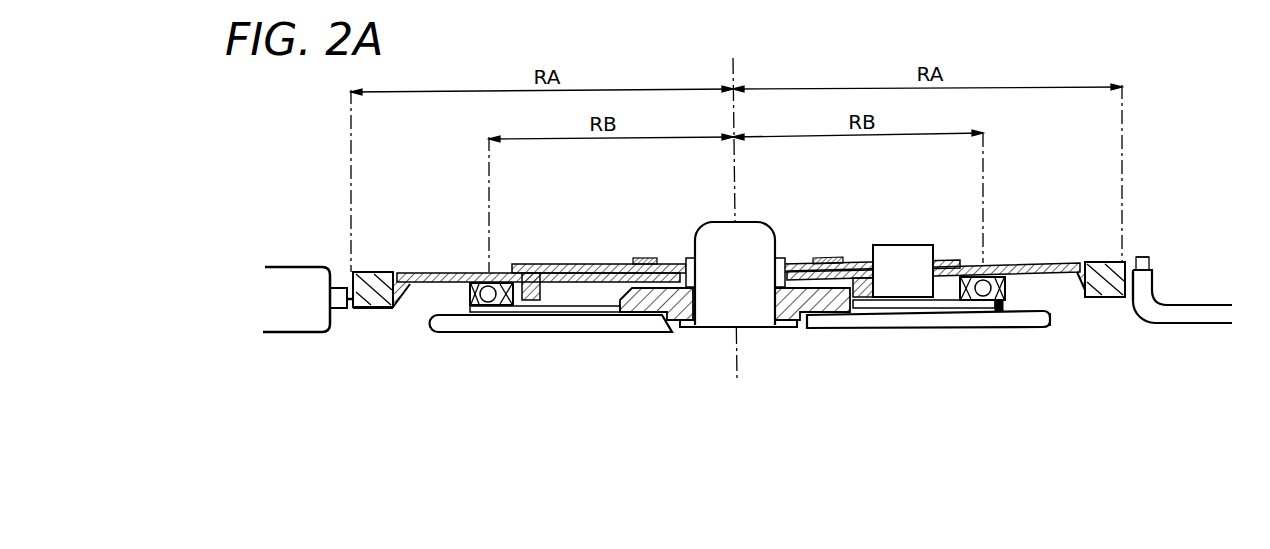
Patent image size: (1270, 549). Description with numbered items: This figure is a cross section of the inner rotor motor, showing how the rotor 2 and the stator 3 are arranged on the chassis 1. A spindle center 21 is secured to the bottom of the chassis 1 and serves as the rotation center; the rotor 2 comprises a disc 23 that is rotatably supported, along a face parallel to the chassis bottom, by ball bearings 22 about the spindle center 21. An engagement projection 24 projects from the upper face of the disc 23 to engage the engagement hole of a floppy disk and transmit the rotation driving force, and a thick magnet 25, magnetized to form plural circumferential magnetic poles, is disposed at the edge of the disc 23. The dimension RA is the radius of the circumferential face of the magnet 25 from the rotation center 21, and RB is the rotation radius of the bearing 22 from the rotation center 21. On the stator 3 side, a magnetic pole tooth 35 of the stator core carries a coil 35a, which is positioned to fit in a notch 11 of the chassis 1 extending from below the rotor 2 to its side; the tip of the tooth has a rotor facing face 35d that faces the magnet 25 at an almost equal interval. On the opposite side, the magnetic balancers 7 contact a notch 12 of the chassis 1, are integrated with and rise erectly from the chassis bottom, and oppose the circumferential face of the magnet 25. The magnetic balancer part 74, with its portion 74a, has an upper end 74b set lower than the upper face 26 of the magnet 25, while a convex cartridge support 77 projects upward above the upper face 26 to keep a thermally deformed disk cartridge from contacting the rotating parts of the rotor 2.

The chassis 1 is at (855, 320).
The rotor 2 is at (586, 253).
The stator 3 is at (308, 308).
The magnetic balancers 7 is at (1182, 256).
The notch 11 is at (423, 333).
The notch 12 is at (1053, 318).
The spindle center 21 is at (735, 362).
The ball bearings 22 is at (489, 306).
The disc 23 is at (458, 272).
The engagement projection 24 is at (907, 253).
The magnet 25 is at (373, 284).
The upper face 26 is at (1100, 261).
The magnetic pole tooth 35 is at (340, 290).
The coil 35a is at (282, 283).
The rotor facing face 35d is at (357, 309).
The magnetic balancer part 74 is at (1182, 256).
The bracket vertical portion 74a is at (1135, 302).
The upper end 74b is at (1147, 257).
The cartridge support 77 is at (1138, 256).